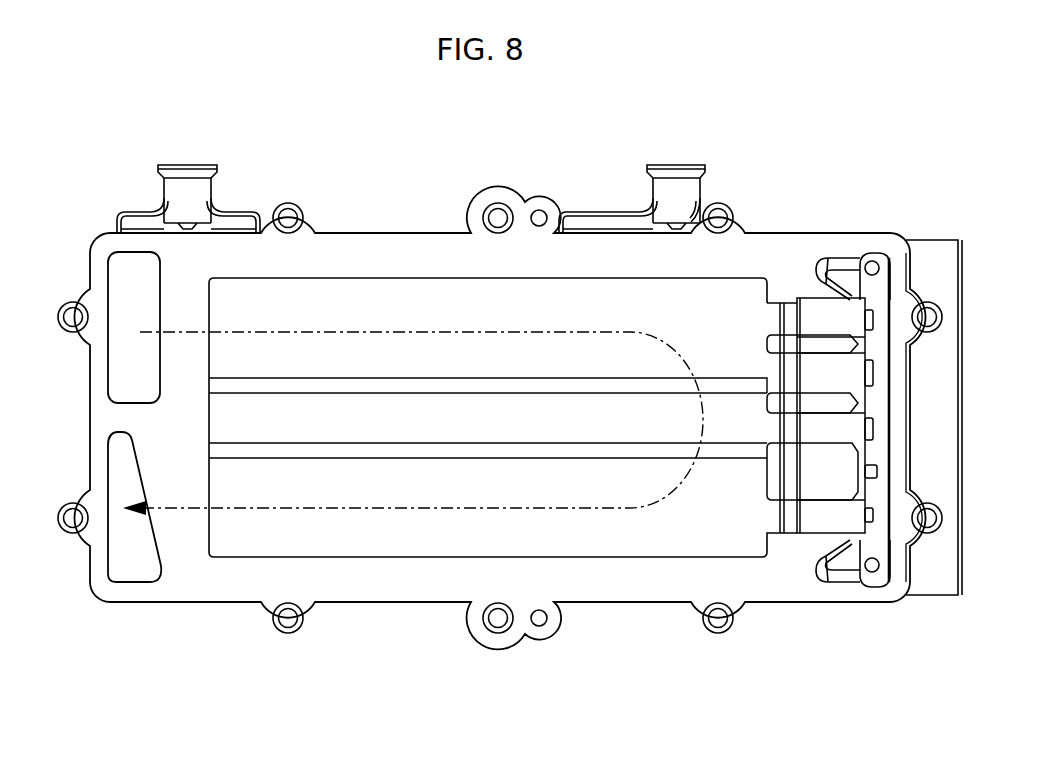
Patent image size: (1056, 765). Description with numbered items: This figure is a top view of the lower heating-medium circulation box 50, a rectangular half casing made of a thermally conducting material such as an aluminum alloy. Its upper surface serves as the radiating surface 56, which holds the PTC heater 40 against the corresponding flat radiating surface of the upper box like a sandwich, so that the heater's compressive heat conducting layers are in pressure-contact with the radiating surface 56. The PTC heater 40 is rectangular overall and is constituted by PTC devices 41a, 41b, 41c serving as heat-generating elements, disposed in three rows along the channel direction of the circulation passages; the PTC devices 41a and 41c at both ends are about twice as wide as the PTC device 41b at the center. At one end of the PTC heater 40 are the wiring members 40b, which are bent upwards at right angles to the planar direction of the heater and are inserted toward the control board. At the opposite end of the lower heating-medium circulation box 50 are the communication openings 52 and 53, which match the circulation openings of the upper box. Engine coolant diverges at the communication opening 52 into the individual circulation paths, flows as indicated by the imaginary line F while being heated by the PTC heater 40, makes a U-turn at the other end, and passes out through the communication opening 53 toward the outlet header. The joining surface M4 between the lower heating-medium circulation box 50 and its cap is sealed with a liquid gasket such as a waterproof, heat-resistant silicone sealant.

The lower heating-medium circulation box 50 is at (378, 168).
The radiating surface 56 is at (607, 257).
The joining surface M4 is at (773, 250).
The communication opening 52 is at (132, 272).
The communication opening 53 is at (122, 475).
The imaginary line F is at (658, 343).
The PTC heater 40 is at (490, 683).
The PTC device 41a is at (340, 532).
The PTC device 41b is at (395, 425).
The PTC device 41c is at (463, 350).
The wiring members 40b is at (873, 403).